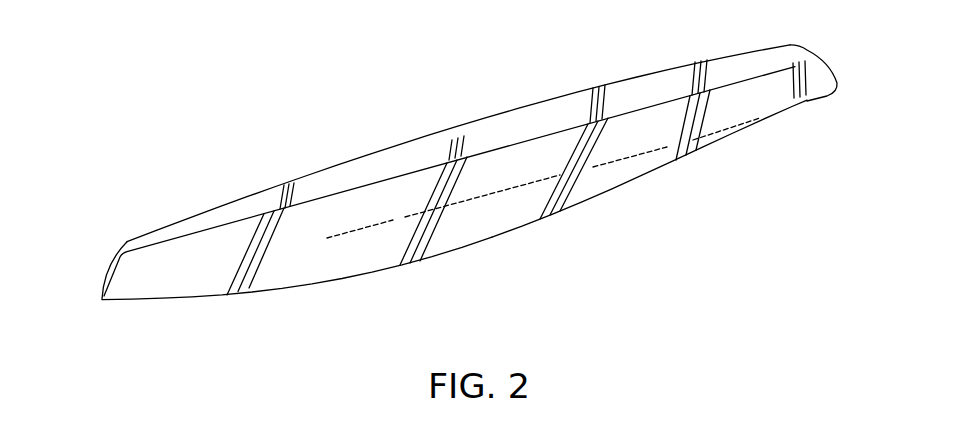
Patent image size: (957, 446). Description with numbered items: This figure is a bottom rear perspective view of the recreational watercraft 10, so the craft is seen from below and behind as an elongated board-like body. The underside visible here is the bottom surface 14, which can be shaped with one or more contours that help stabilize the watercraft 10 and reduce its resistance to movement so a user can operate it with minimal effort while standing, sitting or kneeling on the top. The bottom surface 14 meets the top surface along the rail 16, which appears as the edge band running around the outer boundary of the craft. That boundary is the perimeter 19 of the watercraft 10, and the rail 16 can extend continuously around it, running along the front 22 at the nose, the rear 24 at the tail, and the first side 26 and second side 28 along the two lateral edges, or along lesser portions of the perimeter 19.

The recreational watercraft 10 is at (300, 112).
The bottom surface 14 is at (283, 278).
The rail 16 is at (453, 131).
The perimeter 19 is at (178, 223).
The front 22 is at (828, 73).
The rear 24 is at (108, 270).
The first side 26 is at (508, 233).
The second side 28 is at (317, 188).